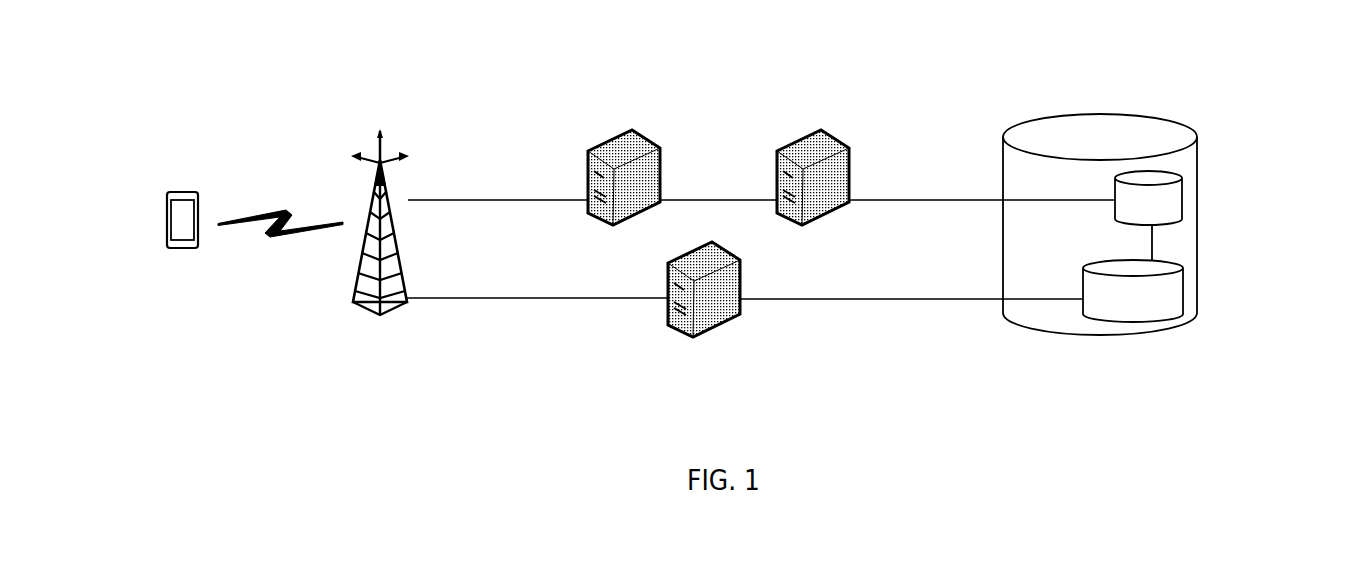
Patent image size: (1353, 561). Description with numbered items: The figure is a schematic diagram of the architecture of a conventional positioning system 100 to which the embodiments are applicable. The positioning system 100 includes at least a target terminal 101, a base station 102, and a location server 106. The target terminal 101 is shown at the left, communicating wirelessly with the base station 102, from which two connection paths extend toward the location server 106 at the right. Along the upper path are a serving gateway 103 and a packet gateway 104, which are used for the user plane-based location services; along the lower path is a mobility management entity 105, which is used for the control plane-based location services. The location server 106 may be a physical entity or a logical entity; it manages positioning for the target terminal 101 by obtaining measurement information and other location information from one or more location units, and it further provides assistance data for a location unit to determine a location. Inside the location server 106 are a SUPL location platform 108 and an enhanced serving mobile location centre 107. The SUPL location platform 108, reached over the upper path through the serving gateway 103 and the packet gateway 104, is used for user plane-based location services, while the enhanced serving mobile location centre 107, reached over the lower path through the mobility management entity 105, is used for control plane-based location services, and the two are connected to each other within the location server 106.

The positioning system 100 is at (1198, 63).
The target terminal 101 is at (178, 250).
The base station 102 is at (378, 316).
The serving gateway 103 is at (626, 131).
The packet gateway 104 is at (815, 131).
The mobility management entity 105 is at (693, 338).
The location server 106 is at (1040, 331).
The enhanced serving mobile location centre 107 is at (1183, 292).
The SUPL location platform 108 is at (1182, 200).